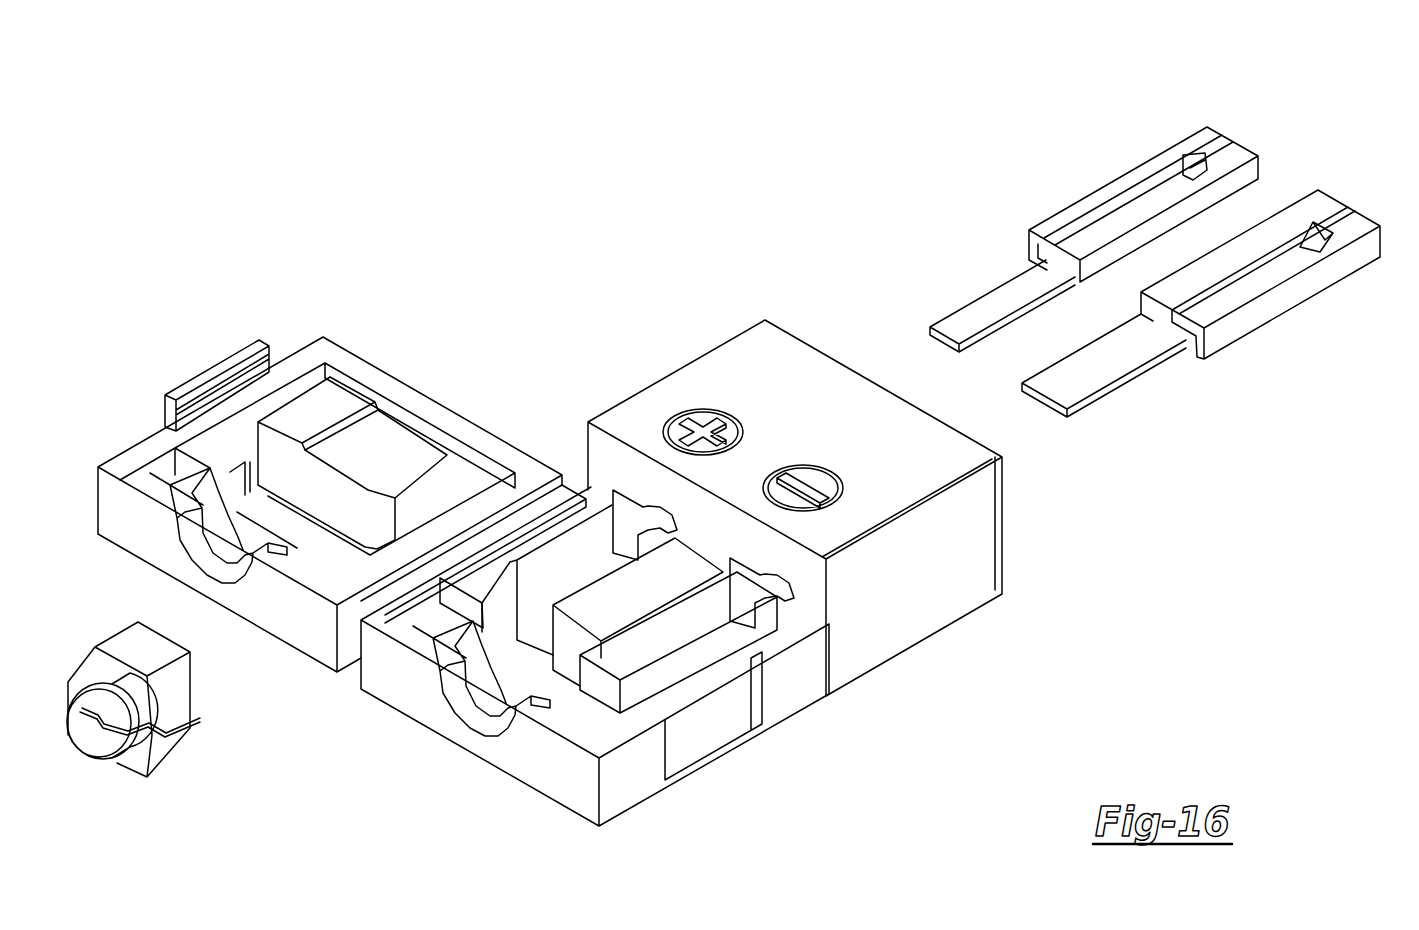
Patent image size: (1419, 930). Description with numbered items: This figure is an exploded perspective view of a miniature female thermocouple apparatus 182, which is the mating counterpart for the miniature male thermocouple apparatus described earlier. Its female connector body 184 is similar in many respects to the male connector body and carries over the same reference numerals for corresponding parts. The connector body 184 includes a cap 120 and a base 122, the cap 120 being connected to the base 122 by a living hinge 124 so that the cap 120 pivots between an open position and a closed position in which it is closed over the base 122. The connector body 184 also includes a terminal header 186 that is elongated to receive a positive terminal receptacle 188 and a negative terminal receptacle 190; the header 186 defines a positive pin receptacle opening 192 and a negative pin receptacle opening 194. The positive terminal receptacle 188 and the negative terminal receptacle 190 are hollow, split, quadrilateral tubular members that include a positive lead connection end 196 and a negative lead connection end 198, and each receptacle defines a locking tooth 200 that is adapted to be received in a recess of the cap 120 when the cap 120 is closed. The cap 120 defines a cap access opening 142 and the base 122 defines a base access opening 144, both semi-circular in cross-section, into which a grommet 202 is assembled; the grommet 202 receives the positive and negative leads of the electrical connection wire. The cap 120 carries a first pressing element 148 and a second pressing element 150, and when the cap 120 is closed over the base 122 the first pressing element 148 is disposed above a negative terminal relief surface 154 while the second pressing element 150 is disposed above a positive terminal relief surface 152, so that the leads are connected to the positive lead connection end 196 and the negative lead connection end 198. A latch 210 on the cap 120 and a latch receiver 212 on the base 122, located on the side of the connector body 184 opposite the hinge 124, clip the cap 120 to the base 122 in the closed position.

The cap 120 is at (134, 472).
The base 122 is at (630, 772).
The living hinge 124 is at (541, 495).
The cap access opening 142 is at (218, 560).
The base access opening 144 is at (485, 712).
The first pressing element 148 is at (445, 455).
The second pressing element 150 is at (342, 400).
The positive terminal relief surface 152 is at (545, 530).
The negative terminal relief surface 154 is at (695, 630).
The miniature female thermocouple apparatus 182 is at (426, 189).
The female connector body 184 is at (1002, 532).
The terminal header 186 is at (752, 357).
The positive terminal receptacle 188 is at (1105, 200).
The negative terminal receptacle 190 is at (1250, 290).
The positive pin receptacle opening 192 is at (648, 529).
The negative pin receptacle opening 194 is at (785, 603).
The positive lead connection end 196 is at (983, 310).
The negative lead connection end 198 is at (1100, 370).
The locking tooth 200 is at (1192, 160).
The grommet 202 is at (177, 710).
The latch 210 is at (207, 380).
The latch receiver 212 is at (702, 713).